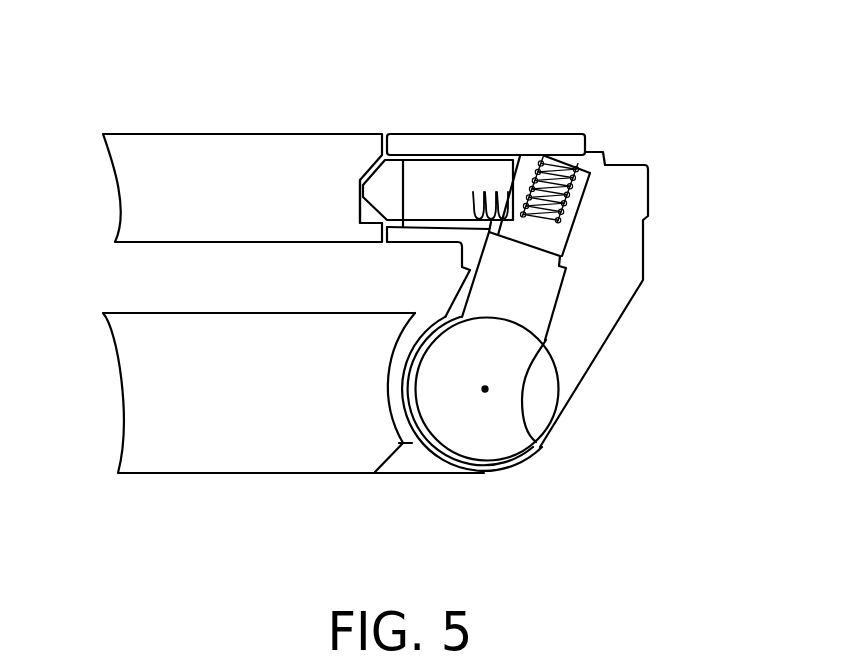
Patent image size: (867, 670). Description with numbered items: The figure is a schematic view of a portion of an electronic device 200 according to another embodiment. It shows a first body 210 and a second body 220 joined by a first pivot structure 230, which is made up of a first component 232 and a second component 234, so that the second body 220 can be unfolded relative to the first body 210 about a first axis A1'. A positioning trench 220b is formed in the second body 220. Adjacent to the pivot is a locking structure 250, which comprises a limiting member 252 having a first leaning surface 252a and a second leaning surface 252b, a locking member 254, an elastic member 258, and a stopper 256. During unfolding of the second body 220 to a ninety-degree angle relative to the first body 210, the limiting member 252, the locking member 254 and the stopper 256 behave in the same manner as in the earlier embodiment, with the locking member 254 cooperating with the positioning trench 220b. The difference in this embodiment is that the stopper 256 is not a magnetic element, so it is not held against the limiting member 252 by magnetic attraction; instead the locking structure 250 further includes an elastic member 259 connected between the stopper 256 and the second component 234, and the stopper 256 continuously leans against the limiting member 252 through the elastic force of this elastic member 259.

The electronic device 200 is at (686, 575).
The first body 210 is at (205, 450).
The second body 220 is at (213, 162).
The positioning trench 220b is at (359, 210).
The first pivot structure 230 is at (707, 356).
The first component 232 is at (518, 412).
The second component 234 is at (583, 362).
The locking structure 250 is at (682, 53).
The limiting member 252 is at (527, 360).
The first leaning surface 252a is at (525, 437).
The second leaning surface 252b is at (415, 376).
The locking member 254 is at (457, 173).
The stopper 256 is at (513, 230).
The elastic member 258 is at (493, 178).
The elastic member 259 is at (565, 158).
The first axis A1' is at (424, 470).